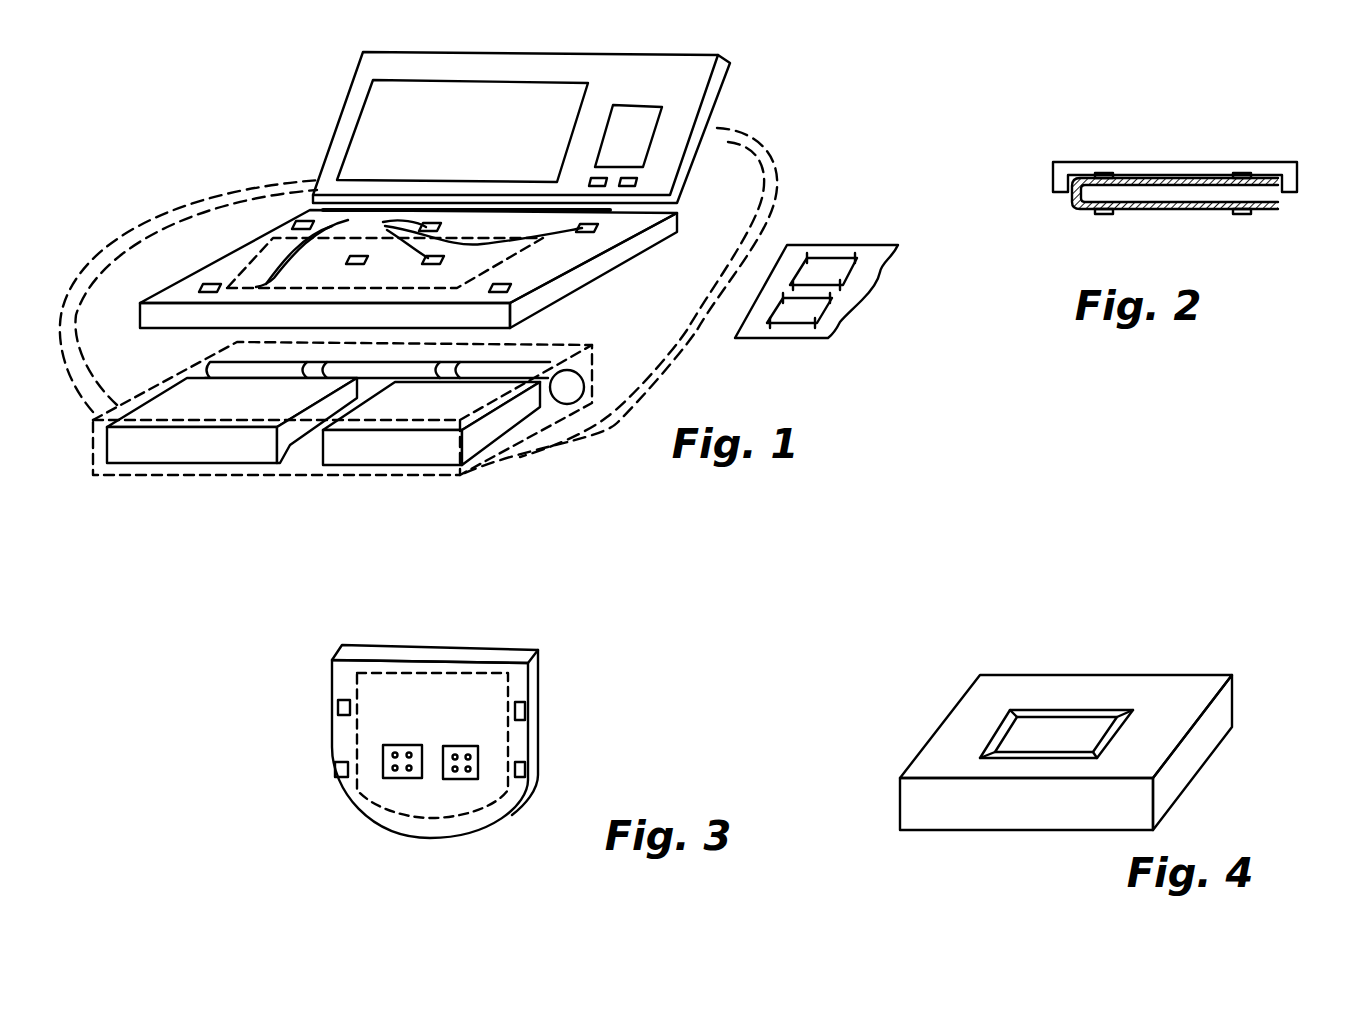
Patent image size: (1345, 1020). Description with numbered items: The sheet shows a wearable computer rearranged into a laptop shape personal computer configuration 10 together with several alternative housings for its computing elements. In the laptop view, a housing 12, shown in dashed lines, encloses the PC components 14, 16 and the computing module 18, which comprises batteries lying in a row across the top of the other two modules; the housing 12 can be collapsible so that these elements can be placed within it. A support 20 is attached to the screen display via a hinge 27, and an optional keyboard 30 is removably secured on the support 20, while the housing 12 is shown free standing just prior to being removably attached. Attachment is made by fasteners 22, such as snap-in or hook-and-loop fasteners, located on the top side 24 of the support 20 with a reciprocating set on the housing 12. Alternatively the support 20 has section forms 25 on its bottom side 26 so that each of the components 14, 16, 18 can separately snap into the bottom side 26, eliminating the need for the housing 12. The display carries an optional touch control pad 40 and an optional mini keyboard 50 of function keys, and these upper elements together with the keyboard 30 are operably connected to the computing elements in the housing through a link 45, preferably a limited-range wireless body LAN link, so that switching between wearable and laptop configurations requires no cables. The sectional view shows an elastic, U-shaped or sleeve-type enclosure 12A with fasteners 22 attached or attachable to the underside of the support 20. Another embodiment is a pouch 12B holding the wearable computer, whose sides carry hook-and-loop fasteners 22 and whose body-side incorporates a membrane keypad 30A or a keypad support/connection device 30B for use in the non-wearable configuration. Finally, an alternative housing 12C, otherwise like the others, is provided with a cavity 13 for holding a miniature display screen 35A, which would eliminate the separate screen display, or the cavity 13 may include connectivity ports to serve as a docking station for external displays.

In FIG. 3, the laptop shape personal computer configuration 10 is at (440, 680).
In FIG. 1, the housing 12 is at (165, 371).
In FIG. 2, the sleeve-type enclosure 12A is at (1155, 217).
In FIG. 3, the pouch 12B is at (537, 682).
In FIG. 4, the alternative housing 12C is at (1165, 680).
In FIG. 4, the cavity 13 is at (1085, 704).
In FIG. 1, the PC component 14 is at (397, 452).
In FIG. 1, the PC component 16 is at (177, 448).
In FIG. 1, the computing module (batteries) 18 is at (237, 363).
In FIG. 1, the support 20 is at (213, 270).
In FIG. 2, the support 20 is at (1298, 182).
In FIG. 1, the fasteners 22 is at (353, 255).
In FIG. 2, the fasteners 22 is at (1103, 173).
In FIG. 3, the fasteners 22 is at (338, 705).
In FIG. 1, the top side 24 is at (586, 262).
In FIG. 1, the section forms 25 is at (823, 267).
In FIG. 1, the bottom side 26 is at (560, 302).
In FIG. 1, the hinge 27 is at (613, 215).
In FIG. 1, the keyboard 30 is at (285, 252).
In FIG. 3, the membrane keypad 30A is at (393, 780).
In FIG. 3, the keypad support/connection device 30B is at (470, 780).
In FIG. 4, the miniature display screen 35A is at (1078, 733).
In FIG. 1, the touch control pad 40 is at (633, 140).
In FIG. 1, the link 45 is at (837, 150).
In FIG. 1, the mini keyboard (function keys) 50 is at (640, 183).